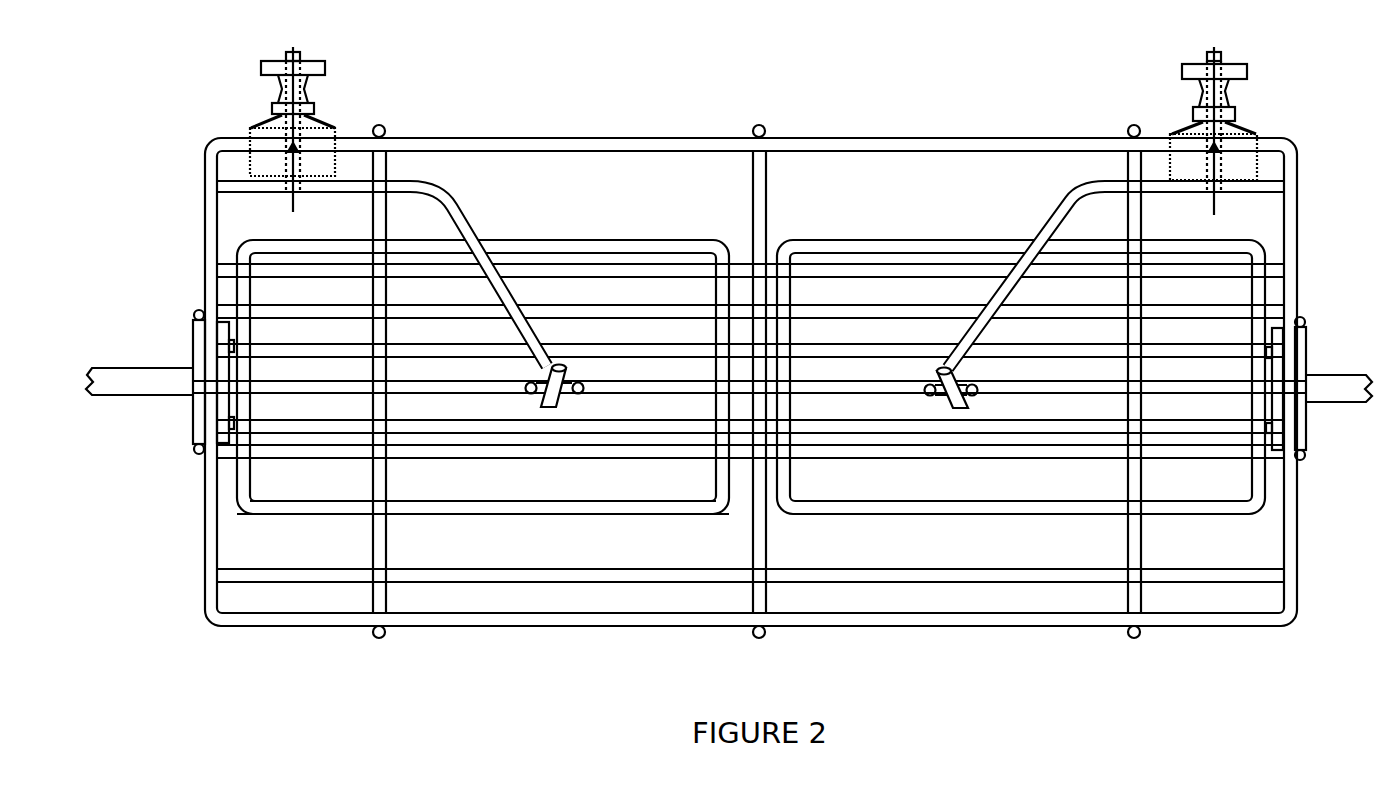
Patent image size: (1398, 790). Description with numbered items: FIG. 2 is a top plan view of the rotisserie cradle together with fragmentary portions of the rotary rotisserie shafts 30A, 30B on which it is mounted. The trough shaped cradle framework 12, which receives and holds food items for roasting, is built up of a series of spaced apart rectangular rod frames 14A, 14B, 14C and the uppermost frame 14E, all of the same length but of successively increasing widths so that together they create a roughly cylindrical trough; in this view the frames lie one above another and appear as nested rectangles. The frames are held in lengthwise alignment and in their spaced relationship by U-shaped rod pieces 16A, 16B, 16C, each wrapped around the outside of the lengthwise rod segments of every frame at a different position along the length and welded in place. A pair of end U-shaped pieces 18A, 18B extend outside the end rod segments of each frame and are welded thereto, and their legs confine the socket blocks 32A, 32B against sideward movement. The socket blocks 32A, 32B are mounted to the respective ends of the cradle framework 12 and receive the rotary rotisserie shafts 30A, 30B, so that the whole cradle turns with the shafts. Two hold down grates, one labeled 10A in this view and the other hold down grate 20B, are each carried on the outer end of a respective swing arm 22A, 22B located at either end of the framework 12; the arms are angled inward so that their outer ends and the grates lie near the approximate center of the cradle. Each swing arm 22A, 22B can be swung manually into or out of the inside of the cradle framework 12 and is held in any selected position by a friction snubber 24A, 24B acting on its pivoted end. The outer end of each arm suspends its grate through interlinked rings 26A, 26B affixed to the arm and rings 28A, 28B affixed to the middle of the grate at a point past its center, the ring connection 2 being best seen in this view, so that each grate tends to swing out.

The latch assembly 2 is at (569, 423).
The first gate panel 10A is at (632, 240).
The cradle framework 12 is at (327, 625).
The rectangular rod frame 14A is at (278, 352).
The rectangular rod frame 14B is at (230, 495).
The rectangular rod frame 14C is at (232, 567).
The rectangular rod frame 14E is at (250, 618).
The U-shaped rod piece 16A is at (380, 638).
The U-shaped rod piece 16B is at (760, 638).
The U-shaped rod piece 16C is at (1137, 640).
The end U-shaped piece 18A is at (197, 312).
The end U-shaped piece 18B is at (1303, 320).
The hold down grate 20B is at (965, 240).
The swing arm 22A is at (460, 207).
The swing arm 22B is at (1073, 187).
The friction snubber 24A is at (252, 98).
The friction snubber 24B is at (1248, 102).
The interlinked ring 26A is at (555, 395).
The interlinked ring 26B is at (968, 402).
The interlinked ring 28A is at (595, 374).
The interlinked ring 28B is at (922, 388).
The rotary rotisserie shaft 30A is at (137, 397).
The rotary rotisserie shaft 30B is at (1327, 403).
The socket block 32A is at (192, 348).
The socket block 32B is at (1307, 357).